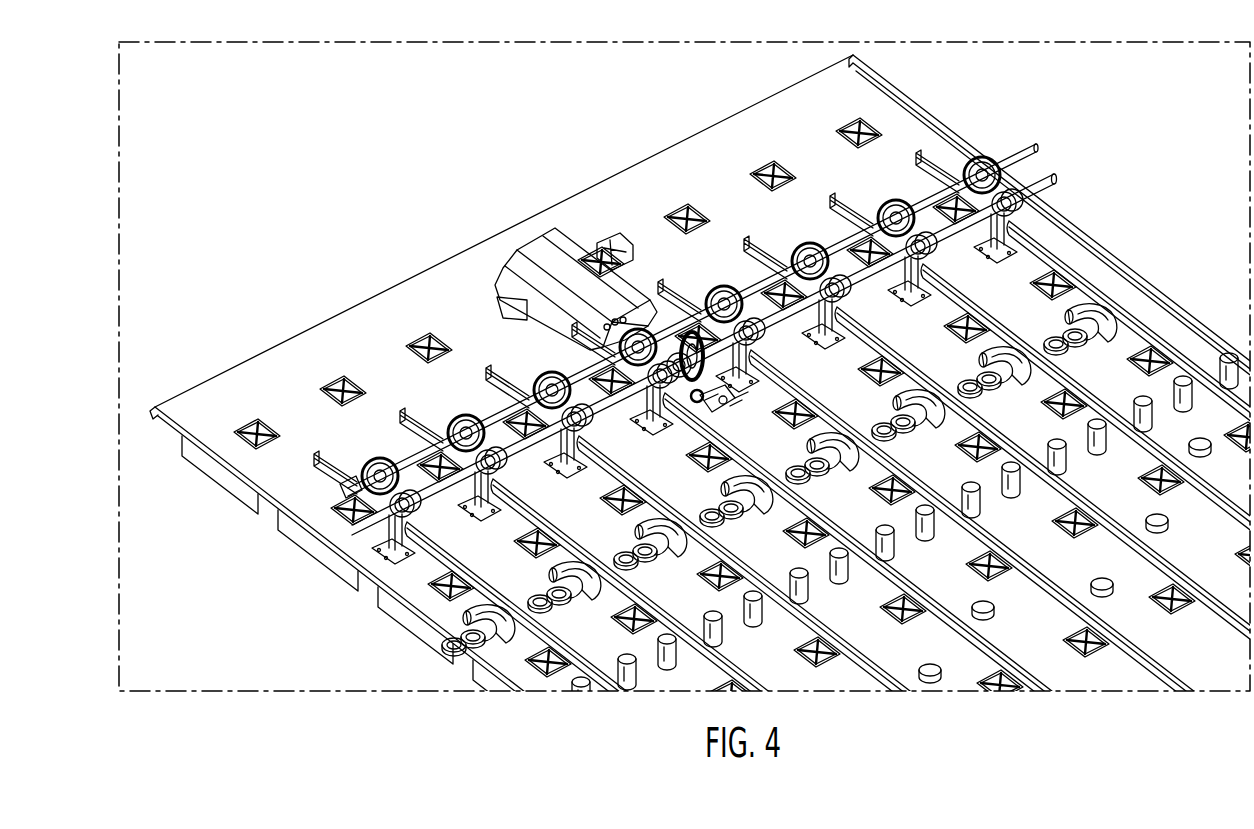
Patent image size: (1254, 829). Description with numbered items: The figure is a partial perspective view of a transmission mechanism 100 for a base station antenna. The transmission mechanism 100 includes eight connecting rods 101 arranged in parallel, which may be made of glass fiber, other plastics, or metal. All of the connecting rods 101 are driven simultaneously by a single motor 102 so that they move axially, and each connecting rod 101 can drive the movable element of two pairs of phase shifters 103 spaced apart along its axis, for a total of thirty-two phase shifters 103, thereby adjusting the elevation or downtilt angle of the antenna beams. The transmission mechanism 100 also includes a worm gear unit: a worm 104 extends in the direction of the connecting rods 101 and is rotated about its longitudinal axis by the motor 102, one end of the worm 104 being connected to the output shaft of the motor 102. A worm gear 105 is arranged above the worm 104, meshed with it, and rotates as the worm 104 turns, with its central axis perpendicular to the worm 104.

The transmission mechanism 100 is at (313, 290).
The connecting rod 101 is at (1047, 265).
The motor 102 is at (546, 256).
The phase shifter 103 is at (493, 637).
The worm 104 is at (668, 420).
The worm gear 105 is at (700, 290).